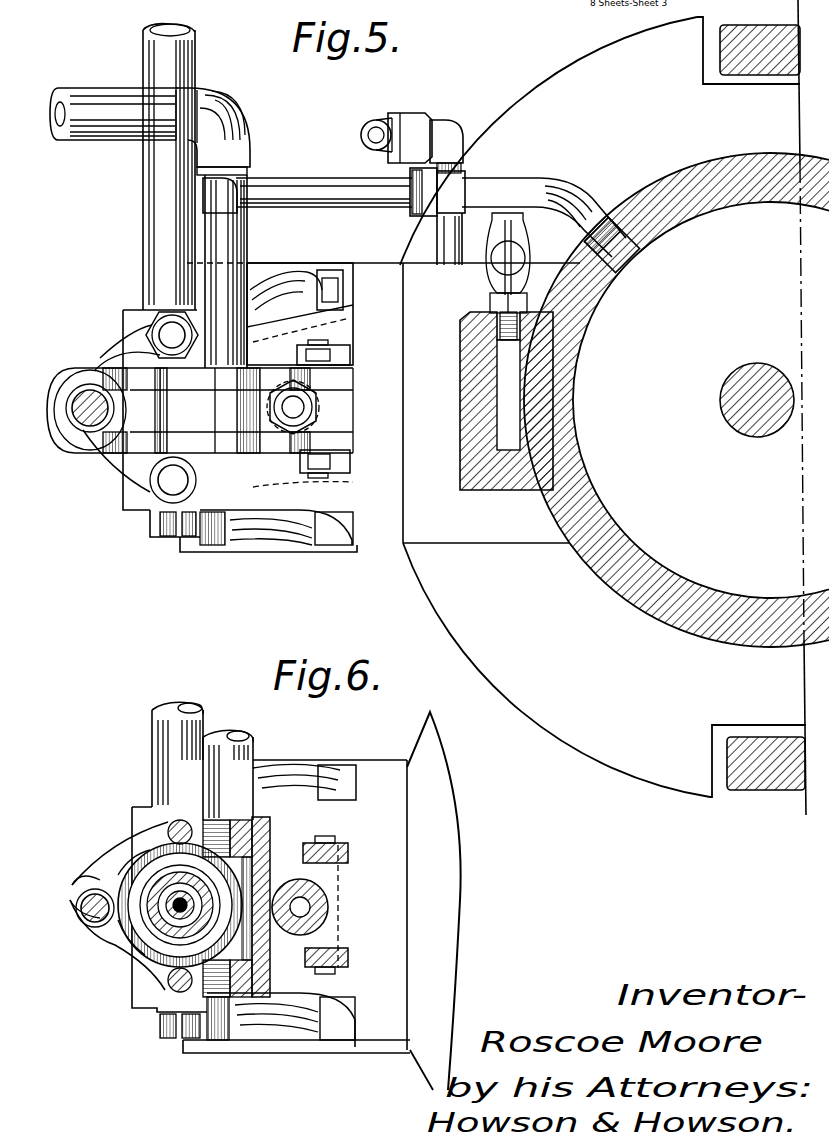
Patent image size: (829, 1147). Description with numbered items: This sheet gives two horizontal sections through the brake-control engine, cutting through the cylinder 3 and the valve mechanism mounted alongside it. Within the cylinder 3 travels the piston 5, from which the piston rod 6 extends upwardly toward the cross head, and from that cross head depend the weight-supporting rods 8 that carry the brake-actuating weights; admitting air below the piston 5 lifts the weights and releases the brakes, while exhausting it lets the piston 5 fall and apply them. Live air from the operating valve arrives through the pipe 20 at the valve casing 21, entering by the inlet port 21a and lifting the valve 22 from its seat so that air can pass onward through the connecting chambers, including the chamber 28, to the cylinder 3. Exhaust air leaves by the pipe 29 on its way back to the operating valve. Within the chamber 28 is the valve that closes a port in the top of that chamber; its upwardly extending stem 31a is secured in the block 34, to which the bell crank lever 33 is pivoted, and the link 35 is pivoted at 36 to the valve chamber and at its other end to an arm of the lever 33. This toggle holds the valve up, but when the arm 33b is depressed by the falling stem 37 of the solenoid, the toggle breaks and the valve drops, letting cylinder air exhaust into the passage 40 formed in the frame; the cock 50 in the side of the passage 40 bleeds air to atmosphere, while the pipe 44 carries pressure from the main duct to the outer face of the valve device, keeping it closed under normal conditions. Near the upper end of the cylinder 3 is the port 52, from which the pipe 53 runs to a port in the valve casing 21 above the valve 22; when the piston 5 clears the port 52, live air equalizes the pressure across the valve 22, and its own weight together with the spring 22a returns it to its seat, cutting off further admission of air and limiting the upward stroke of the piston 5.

In FIG. 5, the cylinder 3 is at (653, 572).
In FIG. 5, the piston 5 is at (760, 294).
In FIG. 5, the piston rod 6 is at (750, 413).
In FIG. 5, the weight-supporting rods 8 is at (703, 50).
In FIG. 5, the pipe 20 is at (104, 125).
In FIG. 6, the pipe 20 is at (227, 750).
In FIG. 5, the valve casing 21 is at (128, 471).
In FIG. 6, the valve casing 21 is at (123, 870).
In FIG. 6, the inlet port 21a is at (245, 870).
In FIG. 6, the valve 22 is at (145, 875).
In FIG. 6, the spring 22a is at (160, 925).
In FIG. 5, the chamber 28 is at (297, 513).
In FIG. 6, the chamber 28 is at (287, 1017).
In FIG. 5, the pipe 29 is at (167, 208).
In FIG. 6, the pipe 29 is at (173, 717).
In FIG. 5, the stem 31a is at (290, 396).
In FIG. 6, the stem 31a is at (327, 913).
In FIG. 5, the bell crank lever 33 is at (353, 383).
In FIG. 5, the arm 33b is at (168, 375).
In FIG. 5, the block 34 is at (311, 407).
In FIG. 5, the link 35 is at (350, 347).
In FIG. 6, the link 35 is at (352, 850).
In FIG. 6, the pivot 36 is at (330, 900).
In FIG. 5, the stem 37 is at (88, 390).
In FIG. 6, the stem 37 is at (75, 915).
In FIG. 5, the passage 40 is at (507, 393).
In FIG. 5, the pipe 44 is at (445, 130).
In FIG. 5, the cock 50 is at (498, 273).
In FIG. 5, the port 52 is at (620, 263).
In FIG. 5, the pipe 53 is at (568, 206).